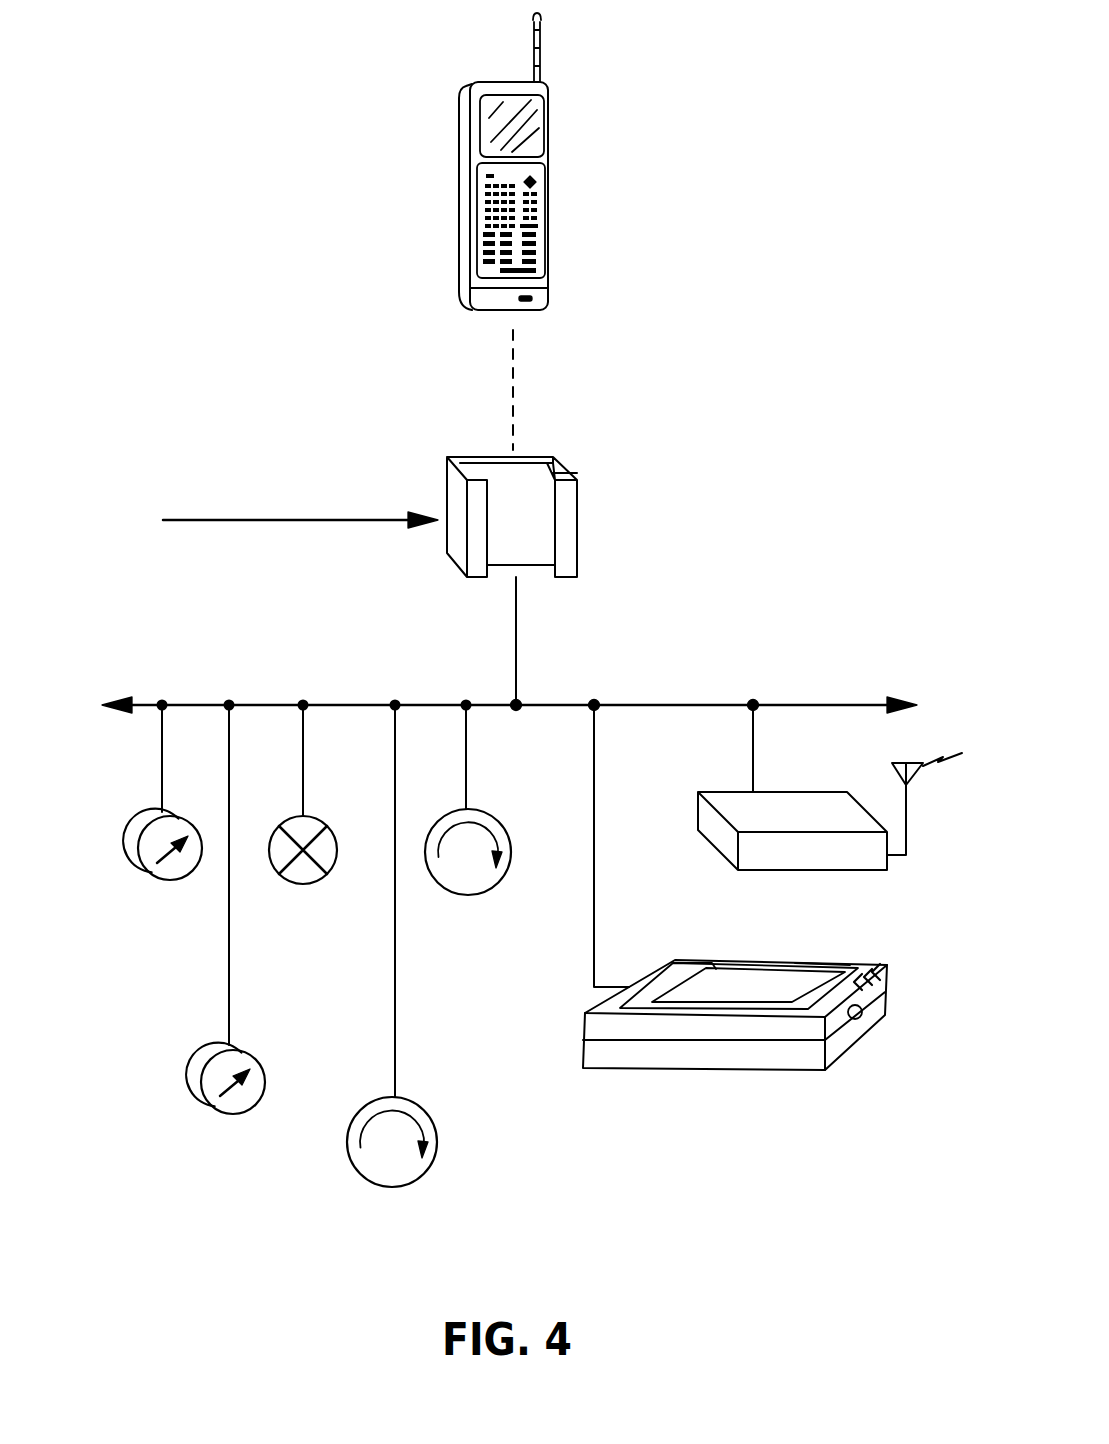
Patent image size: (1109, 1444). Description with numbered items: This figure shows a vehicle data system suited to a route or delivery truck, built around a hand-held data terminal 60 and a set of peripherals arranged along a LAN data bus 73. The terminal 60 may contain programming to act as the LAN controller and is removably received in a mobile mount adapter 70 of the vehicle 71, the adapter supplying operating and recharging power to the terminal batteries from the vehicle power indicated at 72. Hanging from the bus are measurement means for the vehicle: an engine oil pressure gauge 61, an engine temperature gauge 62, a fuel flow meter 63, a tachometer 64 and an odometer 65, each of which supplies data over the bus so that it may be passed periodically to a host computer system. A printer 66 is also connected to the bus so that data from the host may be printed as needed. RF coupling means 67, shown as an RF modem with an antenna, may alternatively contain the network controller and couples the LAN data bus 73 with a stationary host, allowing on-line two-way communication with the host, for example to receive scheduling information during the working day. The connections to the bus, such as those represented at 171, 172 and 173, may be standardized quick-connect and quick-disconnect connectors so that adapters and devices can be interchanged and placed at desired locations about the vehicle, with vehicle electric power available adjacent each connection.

The data terminal 60 is at (527, 82).
The engine oil pressure measurement means 61 is at (137, 823).
The engine temperature measurement means 62 is at (192, 1060).
The fuel flow meter 63 is at (293, 822).
The tachometer 64 is at (426, 1110).
The odometer 65 is at (508, 828).
The printer 66 is at (887, 967).
The RF coupling means 67 is at (730, 789).
The mobile mount adapter 70 is at (552, 458).
The vehicle 71 is at (808, 530).
The vehicle power supply 72 is at (260, 520).
The LAN data bus 73 is at (810, 703).
The connector 171 is at (512, 702).
The connector 172 is at (590, 710).
The connector 173 is at (756, 707).